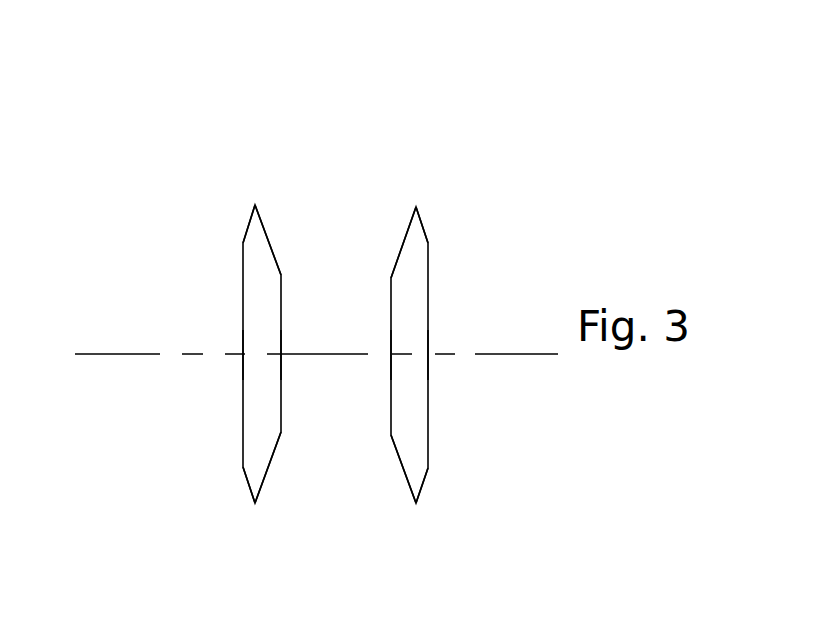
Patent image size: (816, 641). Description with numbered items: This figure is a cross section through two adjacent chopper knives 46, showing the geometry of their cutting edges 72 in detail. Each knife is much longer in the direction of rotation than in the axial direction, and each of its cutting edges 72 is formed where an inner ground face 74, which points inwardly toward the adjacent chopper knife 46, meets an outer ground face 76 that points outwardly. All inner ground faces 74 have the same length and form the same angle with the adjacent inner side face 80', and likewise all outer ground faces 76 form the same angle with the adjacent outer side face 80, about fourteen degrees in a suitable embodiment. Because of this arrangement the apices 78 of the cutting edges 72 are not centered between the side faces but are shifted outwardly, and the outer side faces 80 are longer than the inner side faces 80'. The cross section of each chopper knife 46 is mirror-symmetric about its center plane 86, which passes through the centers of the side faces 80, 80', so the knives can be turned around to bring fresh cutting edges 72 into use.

The chopper knife 46 is at (243, 413).
The cutting edge 72 is at (262, 157).
The inner ground face 74 is at (272, 245).
The outer ground face 76 is at (248, 227).
The apex of the cutting edge 78 is at (255, 205).
The outer side face 80 is at (340, 321).
The inner side face 80' is at (336, 332).
The center plane 86 is at (127, 355).